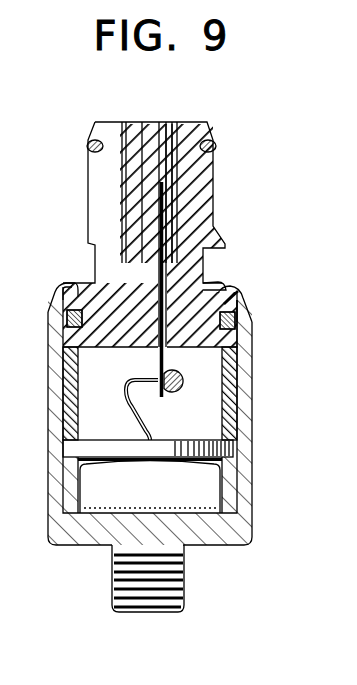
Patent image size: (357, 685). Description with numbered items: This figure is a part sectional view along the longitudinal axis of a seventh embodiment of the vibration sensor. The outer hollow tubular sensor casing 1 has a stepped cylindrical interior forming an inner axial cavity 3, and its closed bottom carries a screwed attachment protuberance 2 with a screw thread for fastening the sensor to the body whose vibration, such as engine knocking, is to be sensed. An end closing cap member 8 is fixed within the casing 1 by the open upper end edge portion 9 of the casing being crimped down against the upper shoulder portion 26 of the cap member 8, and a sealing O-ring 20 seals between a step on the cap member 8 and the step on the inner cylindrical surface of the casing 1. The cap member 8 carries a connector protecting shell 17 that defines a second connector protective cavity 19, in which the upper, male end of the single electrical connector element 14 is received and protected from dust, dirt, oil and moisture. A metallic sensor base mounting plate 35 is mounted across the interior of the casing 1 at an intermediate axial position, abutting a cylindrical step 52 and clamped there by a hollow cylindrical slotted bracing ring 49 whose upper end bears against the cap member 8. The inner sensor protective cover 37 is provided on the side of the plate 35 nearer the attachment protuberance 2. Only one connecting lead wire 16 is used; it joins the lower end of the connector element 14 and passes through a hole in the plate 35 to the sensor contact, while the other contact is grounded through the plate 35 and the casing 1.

The outer hollow tubular sensor casing 1 is at (239, 529).
The screwed attachment protuberance 2 is at (185, 588).
The inner axial cavity 3 is at (68, 398).
The end closing cap member 8 is at (242, 299).
The open upper end edge portion 9 is at (216, 289).
The second electrical connector element 14 is at (167, 206).
The second connecting lead wire 16 is at (128, 404).
The connector protecting shell 17 is at (204, 169).
The second connector protective cavity 19 is at (170, 144).
The sealing O-ring 20 is at (237, 320).
The upper shoulder portion 26 is at (74, 286).
The metallic sensor base mounting plate 35 is at (184, 445).
The inner sensor protective cover 37 is at (212, 500).
The hollow cylindrical slotted bracing ring 49 is at (228, 378).
The cylindrical step 52 is at (230, 453).